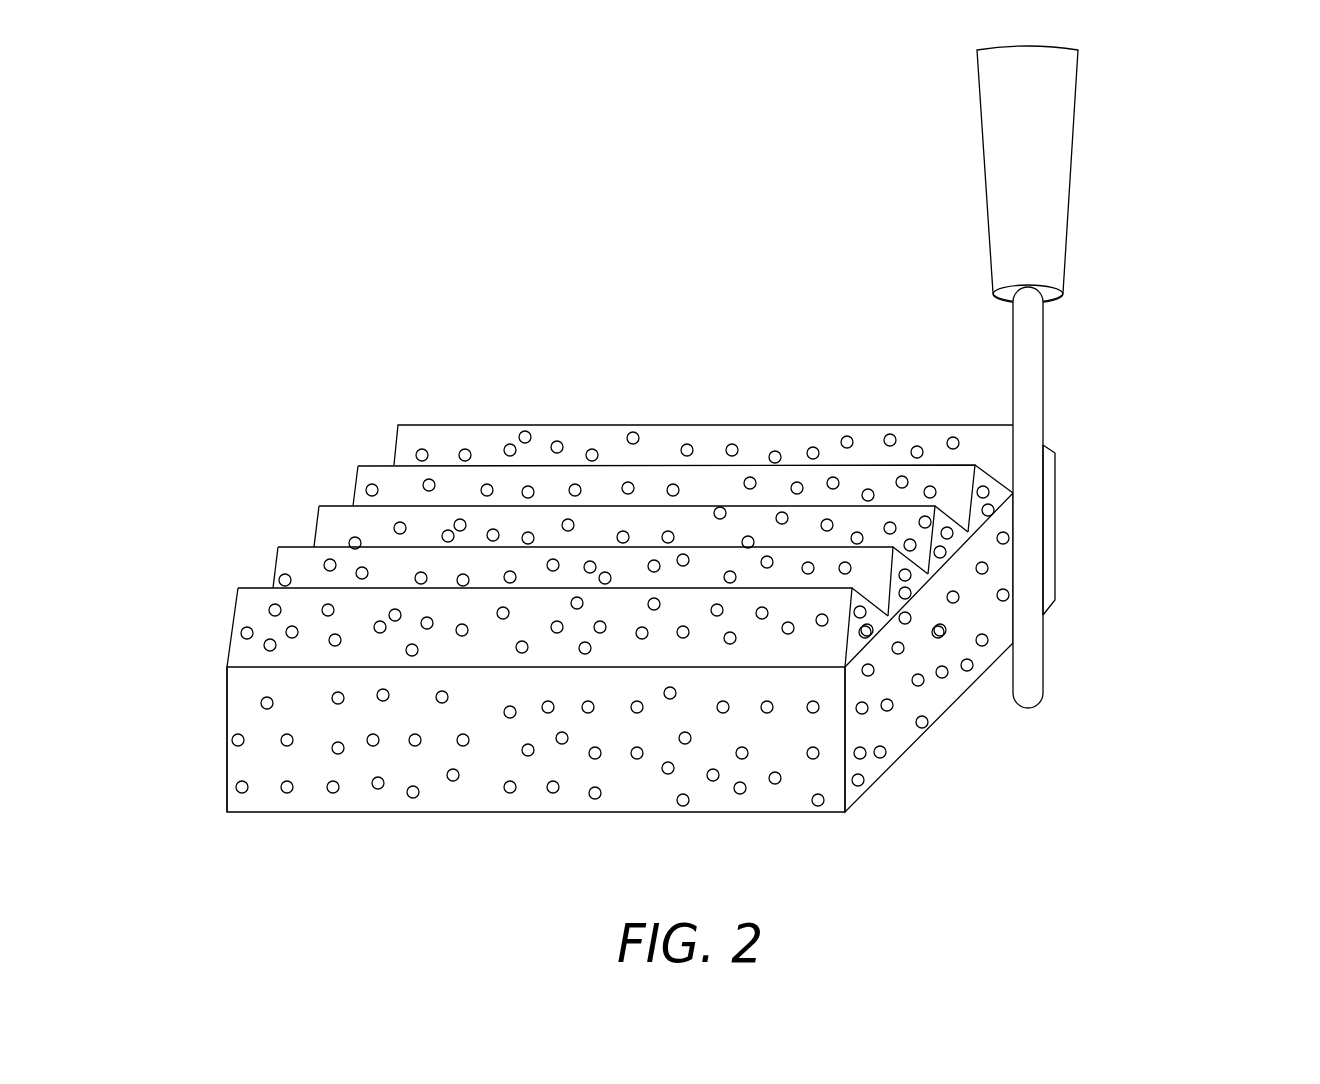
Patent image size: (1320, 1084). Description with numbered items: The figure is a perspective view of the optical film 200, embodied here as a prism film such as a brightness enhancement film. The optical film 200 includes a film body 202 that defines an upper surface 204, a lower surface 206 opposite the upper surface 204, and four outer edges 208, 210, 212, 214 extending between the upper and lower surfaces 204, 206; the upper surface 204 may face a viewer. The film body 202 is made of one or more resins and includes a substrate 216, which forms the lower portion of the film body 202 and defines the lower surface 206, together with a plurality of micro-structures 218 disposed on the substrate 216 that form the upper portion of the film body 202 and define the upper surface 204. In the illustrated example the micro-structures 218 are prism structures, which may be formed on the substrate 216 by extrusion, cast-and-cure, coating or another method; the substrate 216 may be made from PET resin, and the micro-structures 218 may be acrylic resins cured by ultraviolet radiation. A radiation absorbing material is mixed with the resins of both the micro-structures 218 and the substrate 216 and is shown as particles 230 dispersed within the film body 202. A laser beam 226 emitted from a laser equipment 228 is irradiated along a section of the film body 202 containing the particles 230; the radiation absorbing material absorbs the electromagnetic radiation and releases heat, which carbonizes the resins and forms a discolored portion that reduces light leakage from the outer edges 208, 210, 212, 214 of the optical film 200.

The optical film 200 is at (701, 479).
The film body 202 is at (1102, 523).
The upper surface 204 is at (708, 423).
The lower surface 206 is at (606, 703).
The outer edge 208 is at (1053, 551).
The outer edge 210 is at (491, 759).
The outer edge 212 is at (224, 711).
The outer edge 214 is at (1058, 511).
The substrate 216 is at (964, 706).
The micro-structures 218 is at (351, 469).
The laser beam 226 is at (1027, 392).
The laser equipment 228 is at (1063, 112).
The particles 230 is at (624, 489).